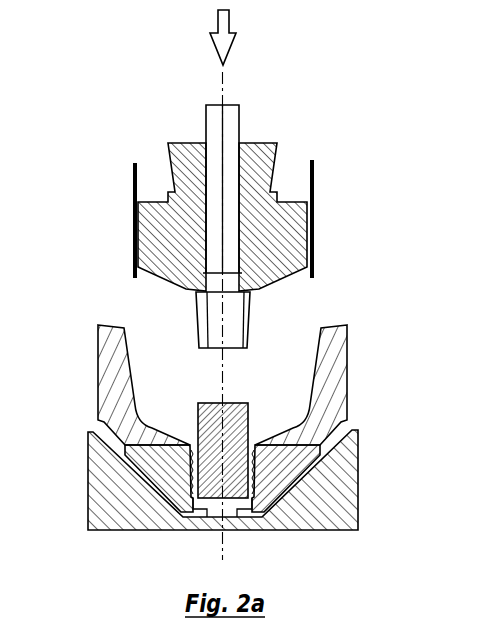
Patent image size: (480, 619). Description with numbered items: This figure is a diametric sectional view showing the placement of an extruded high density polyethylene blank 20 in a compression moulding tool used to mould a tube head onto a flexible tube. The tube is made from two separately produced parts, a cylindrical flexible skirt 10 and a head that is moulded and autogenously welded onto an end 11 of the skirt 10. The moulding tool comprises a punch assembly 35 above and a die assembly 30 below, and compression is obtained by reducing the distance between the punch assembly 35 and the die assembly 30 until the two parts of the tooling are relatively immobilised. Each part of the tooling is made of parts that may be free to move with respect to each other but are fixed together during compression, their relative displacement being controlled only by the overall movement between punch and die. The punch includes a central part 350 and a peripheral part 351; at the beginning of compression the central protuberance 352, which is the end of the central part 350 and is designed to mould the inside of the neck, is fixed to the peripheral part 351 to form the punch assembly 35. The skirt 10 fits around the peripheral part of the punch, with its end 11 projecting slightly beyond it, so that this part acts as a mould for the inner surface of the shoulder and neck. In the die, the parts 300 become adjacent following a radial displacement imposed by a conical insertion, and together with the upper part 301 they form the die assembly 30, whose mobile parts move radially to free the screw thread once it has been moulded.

The flexible skirt 10 is at (135, 160).
The end of the skirt 11 is at (135, 272).
The blank 20 is at (200, 402).
The die assembly 30 is at (410, 325).
The die parts 300 is at (248, 480).
The upper part of the die 301 is at (337, 380).
The punch assembly 35 is at (365, 55).
The central part of the punch 350 is at (228, 125).
The peripheral part of the punch 351 is at (250, 217).
The central protuberance 352 is at (232, 317).